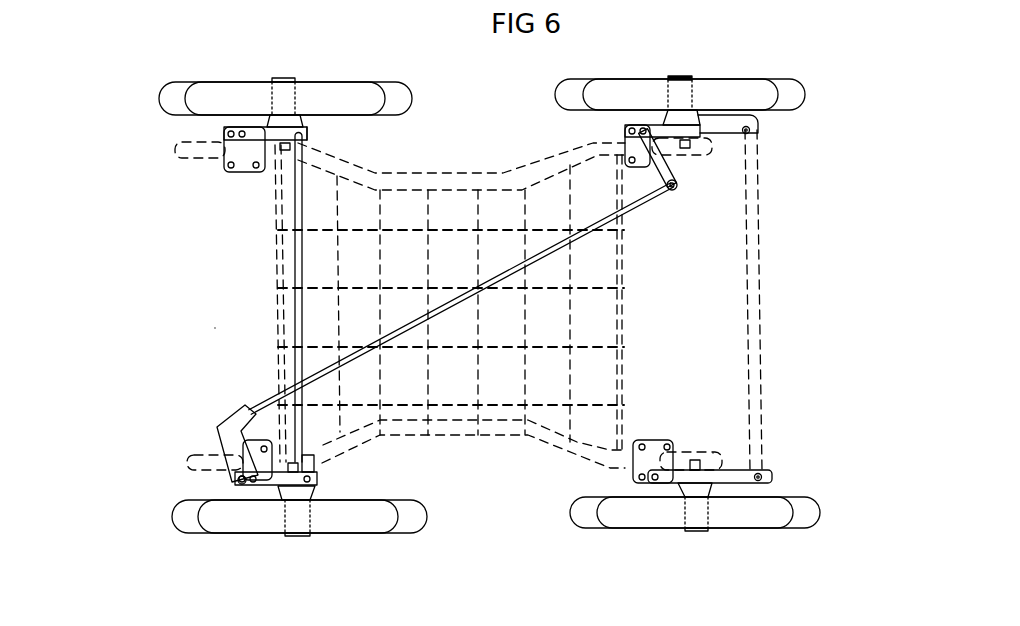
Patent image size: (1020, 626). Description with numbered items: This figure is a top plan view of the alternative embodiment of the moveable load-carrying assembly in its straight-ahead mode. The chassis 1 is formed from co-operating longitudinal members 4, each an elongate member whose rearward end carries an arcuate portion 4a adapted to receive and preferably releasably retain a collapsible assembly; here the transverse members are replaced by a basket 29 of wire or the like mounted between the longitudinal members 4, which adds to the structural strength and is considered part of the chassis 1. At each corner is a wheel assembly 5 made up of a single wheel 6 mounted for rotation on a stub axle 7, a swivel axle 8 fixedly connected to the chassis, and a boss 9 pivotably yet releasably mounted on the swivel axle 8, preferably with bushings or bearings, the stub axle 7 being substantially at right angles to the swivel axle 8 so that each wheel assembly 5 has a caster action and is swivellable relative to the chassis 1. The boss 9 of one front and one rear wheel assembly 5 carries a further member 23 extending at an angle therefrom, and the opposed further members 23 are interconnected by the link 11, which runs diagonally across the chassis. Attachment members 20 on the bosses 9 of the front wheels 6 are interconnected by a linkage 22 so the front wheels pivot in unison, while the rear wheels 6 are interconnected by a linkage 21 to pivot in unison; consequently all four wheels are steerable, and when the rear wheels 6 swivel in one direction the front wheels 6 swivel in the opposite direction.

The chassis 1 is at (215, 328).
The longitudinal member 4 is at (457, 435).
The arcuate portion 4a is at (810, 403).
The wheel assembly 5 is at (170, 122).
The wheel 6 is at (337, 97).
The stub axle 7 is at (273, 78).
The swivel axle 8 is at (240, 135).
The boss 9 is at (256, 131).
The link 11 is at (577, 298).
The attachment member 20 is at (565, 361).
The linkage 21 is at (763, 236).
The linkage 22 is at (298, 272).
The further member 23 is at (220, 435).
The basket 29 is at (627, 323).